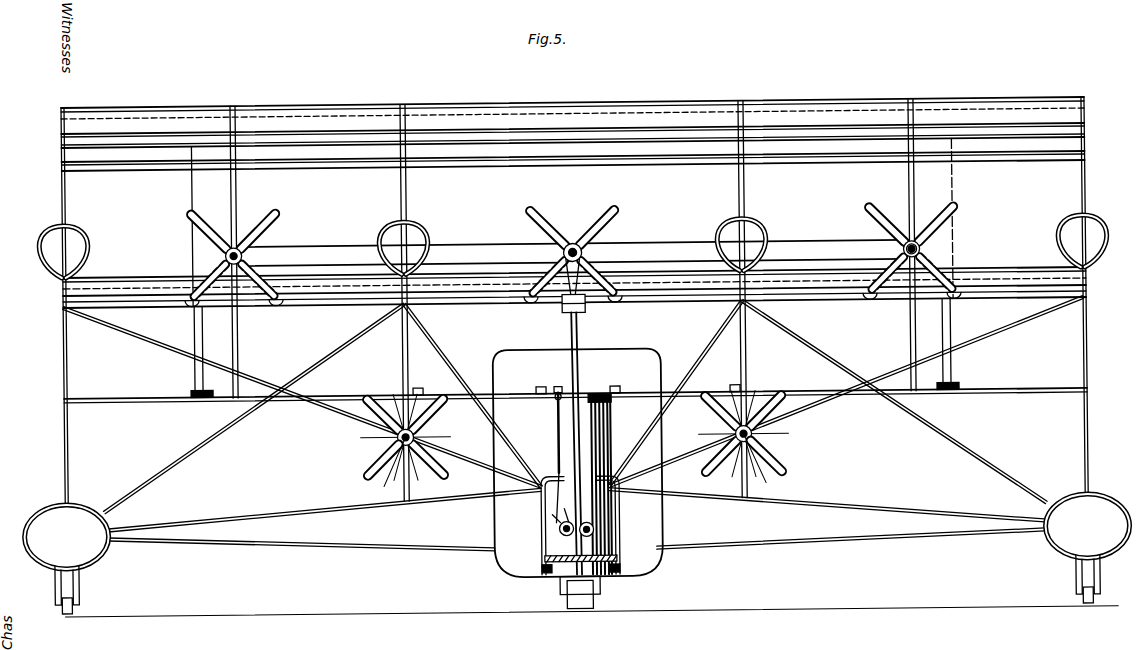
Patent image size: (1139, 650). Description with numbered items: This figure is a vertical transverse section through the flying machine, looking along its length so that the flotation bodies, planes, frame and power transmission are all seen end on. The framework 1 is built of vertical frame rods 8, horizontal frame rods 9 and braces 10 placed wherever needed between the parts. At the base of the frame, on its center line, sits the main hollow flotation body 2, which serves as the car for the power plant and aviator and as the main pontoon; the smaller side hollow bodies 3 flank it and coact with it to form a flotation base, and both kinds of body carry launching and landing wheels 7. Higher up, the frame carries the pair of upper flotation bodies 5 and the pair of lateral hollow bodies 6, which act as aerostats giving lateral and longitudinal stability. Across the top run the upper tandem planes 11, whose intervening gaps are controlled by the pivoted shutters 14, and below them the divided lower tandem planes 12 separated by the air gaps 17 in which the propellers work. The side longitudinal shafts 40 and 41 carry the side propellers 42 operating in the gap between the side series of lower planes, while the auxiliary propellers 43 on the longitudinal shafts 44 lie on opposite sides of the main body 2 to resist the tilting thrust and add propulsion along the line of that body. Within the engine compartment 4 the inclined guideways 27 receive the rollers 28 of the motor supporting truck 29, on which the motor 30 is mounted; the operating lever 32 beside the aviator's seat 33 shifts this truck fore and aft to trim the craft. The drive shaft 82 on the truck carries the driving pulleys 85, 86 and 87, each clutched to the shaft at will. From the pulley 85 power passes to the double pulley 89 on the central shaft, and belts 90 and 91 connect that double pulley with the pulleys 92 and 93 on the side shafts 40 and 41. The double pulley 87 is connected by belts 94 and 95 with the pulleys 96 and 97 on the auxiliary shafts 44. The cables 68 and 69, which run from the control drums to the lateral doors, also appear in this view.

The framework 1 is at (748, 372).
The main hollow flotation body 2 is at (660, 526).
The side hollow bodies 3 is at (48, 514).
The engine compartment 4 is at (497, 512).
The upper flotation bodies 5 is at (424, 232).
The lateral hollow bodies 6 is at (88, 254).
The launching and landing wheels 7 is at (74, 602).
The vertical frame rods 8 is at (1080, 362).
The horizontal frame rods 9 is at (1004, 396).
The braces 10 is at (986, 480).
The upper tandem planes 11 is at (290, 122).
The lower tandem planes 12 is at (146, 286).
The pivoted shutters 14 is at (698, 165).
The air gaps 17 is at (456, 300).
The guideways 27 is at (520, 574).
The rollers 28 is at (550, 586).
The motor supporting truck 29 is at (600, 592).
The motor 30 is at (536, 534).
The operating lever 32 is at (552, 456).
The aviator's seat 33 is at (548, 402).
The side longitudinal shaft 40 is at (224, 248).
The side longitudinal shaft 41 is at (918, 259).
The side propellers 42 is at (276, 214).
The auxiliary propellers 43 is at (362, 476).
The auxiliary propeller shafts 44 is at (392, 442).
The cables 68 is at (952, 380).
The cables 69 is at (192, 378).
The drive shaft 82 is at (606, 546).
The driving pulley 85 is at (604, 434).
The driving pulley 86 is at (602, 452).
The driving pulley 87 is at (606, 538).
The double pulley 89 is at (583, 244).
The belt 90 is at (348, 250).
The belt 91 is at (840, 254).
The pulley 92 is at (224, 259).
The pulley 93 is at (902, 259).
The belt 94 is at (690, 472).
The belt 95 is at (492, 466).
The pulley 96 is at (743, 459).
The pulley 97 is at (393, 464).